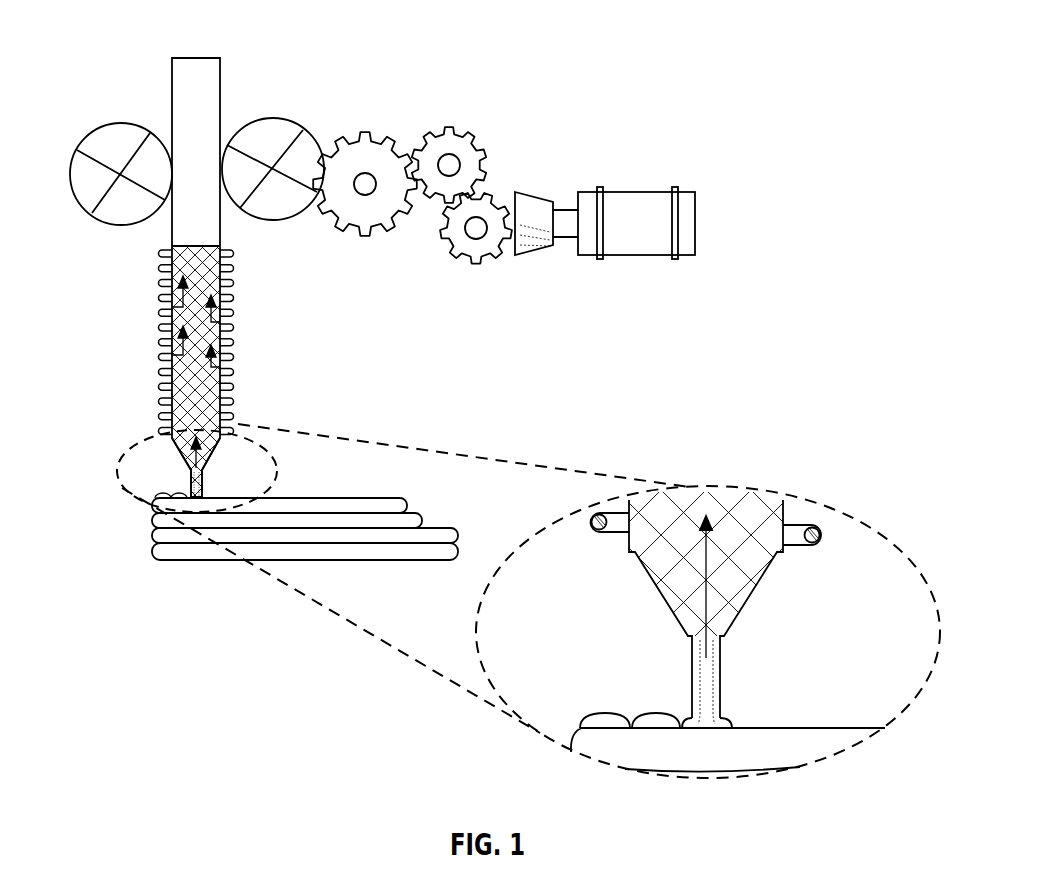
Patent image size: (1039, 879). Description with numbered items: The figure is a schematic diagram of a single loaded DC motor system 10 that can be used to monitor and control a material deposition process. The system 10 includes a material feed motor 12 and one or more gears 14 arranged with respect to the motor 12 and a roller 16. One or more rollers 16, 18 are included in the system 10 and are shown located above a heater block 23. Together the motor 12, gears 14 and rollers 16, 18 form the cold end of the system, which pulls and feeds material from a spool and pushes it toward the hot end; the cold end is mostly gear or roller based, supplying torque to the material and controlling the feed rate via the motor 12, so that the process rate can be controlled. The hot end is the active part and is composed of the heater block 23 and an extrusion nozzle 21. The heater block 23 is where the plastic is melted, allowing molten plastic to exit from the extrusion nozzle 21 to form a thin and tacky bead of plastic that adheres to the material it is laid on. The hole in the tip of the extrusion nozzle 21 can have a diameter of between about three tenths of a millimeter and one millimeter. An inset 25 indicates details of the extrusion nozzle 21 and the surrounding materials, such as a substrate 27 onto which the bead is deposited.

The single loaded DC motor system 10 is at (88, 42).
The material feed motor 12 is at (686, 221).
The gears 14 is at (484, 110).
The roller 16 is at (272, 118).
The roller 18 is at (98, 128).
The extrusion nozzle 21 is at (174, 461).
The heater block 23 is at (108, 334).
The inset 25 is at (812, 506).
The substrate 27 is at (433, 535).